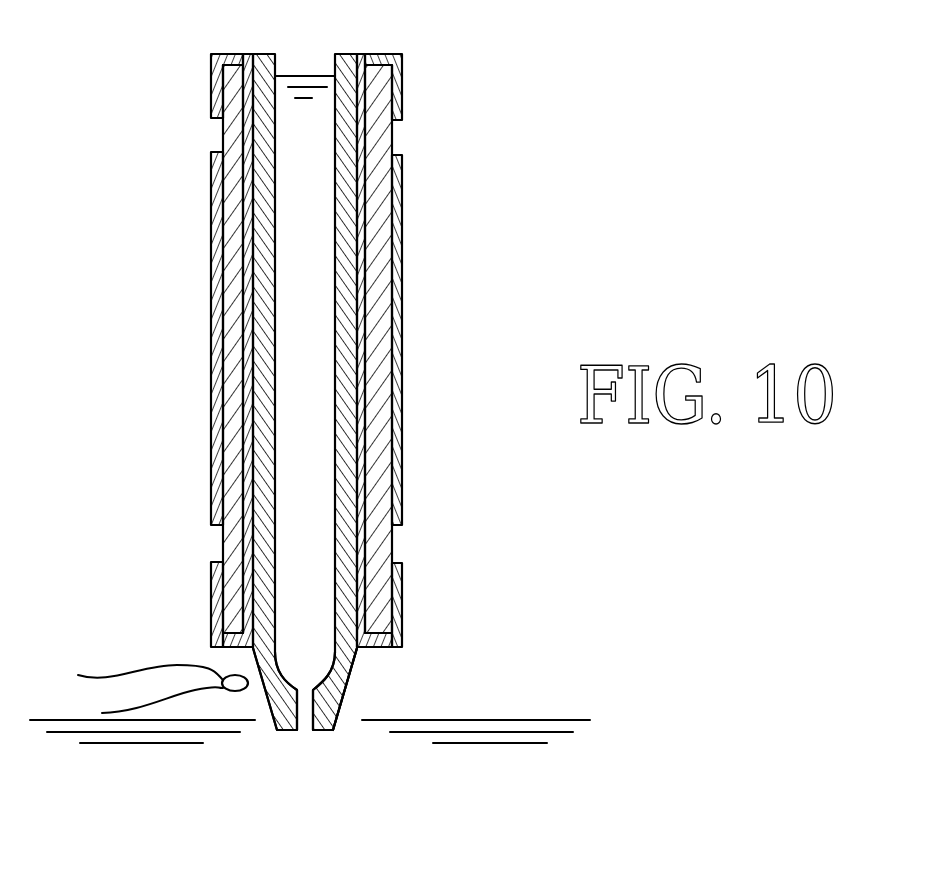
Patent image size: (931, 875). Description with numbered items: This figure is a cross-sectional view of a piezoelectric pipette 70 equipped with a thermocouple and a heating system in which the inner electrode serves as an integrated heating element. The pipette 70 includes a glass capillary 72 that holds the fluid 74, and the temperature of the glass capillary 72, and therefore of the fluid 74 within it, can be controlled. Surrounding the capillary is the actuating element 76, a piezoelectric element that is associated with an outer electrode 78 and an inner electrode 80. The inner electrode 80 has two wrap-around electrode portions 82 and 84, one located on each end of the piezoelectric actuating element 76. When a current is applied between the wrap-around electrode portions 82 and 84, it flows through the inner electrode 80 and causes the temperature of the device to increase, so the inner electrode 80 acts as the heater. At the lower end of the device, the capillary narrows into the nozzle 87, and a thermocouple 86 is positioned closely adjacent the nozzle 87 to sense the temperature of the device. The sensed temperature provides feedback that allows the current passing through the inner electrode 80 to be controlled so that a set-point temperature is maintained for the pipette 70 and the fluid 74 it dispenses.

The piezoelectric pipette 70 is at (550, 221).
The glass capillary 72 is at (350, 333).
The fluid 74 is at (315, 667).
The actuating element 76 is at (233, 468).
The outer electrode 78 is at (222, 290).
The inner electrode 80 is at (248, 383).
The wrap-around electrode portion 82 is at (212, 85).
The wrap-around electrode portion 84 is at (212, 598).
The thermocouple 86 is at (235, 691).
The nozzle 87 is at (352, 697).